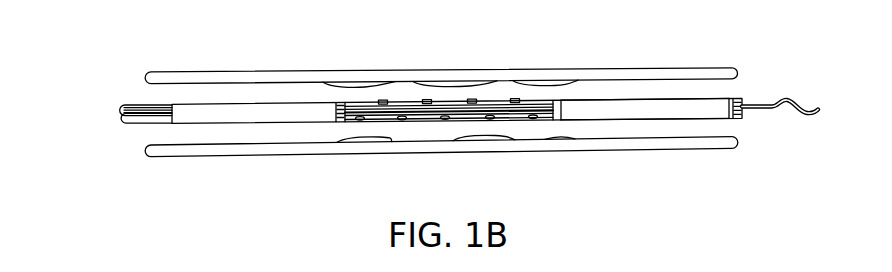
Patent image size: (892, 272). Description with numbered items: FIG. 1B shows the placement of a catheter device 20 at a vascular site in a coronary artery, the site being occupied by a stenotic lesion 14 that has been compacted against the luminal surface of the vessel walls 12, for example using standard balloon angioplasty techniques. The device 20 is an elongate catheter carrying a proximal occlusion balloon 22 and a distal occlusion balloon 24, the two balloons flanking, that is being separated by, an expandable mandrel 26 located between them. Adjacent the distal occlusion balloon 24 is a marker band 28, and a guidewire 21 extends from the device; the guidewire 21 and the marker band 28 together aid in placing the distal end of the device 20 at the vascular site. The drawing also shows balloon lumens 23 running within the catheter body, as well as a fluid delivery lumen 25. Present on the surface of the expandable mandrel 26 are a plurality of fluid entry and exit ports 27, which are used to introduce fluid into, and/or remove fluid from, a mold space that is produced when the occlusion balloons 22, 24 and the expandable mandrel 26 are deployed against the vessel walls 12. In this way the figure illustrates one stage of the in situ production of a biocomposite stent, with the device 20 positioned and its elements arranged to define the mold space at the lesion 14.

The vessel walls 12 is at (655, 147).
The stenotic lesion 14 is at (466, 82).
The device 20 is at (112, 105).
The guidewire 21 is at (782, 99).
The proximal occlusion balloon 22 is at (230, 112).
The balloon lumens 23 is at (163, 113).
The distal occlusion balloon 24 is at (677, 105).
The fluid delivery lumen 25 is at (140, 115).
The expandable mandrel 26 is at (368, 106).
The fluid entry and exit ports 27 is at (425, 101).
The marker band 28 is at (742, 122).